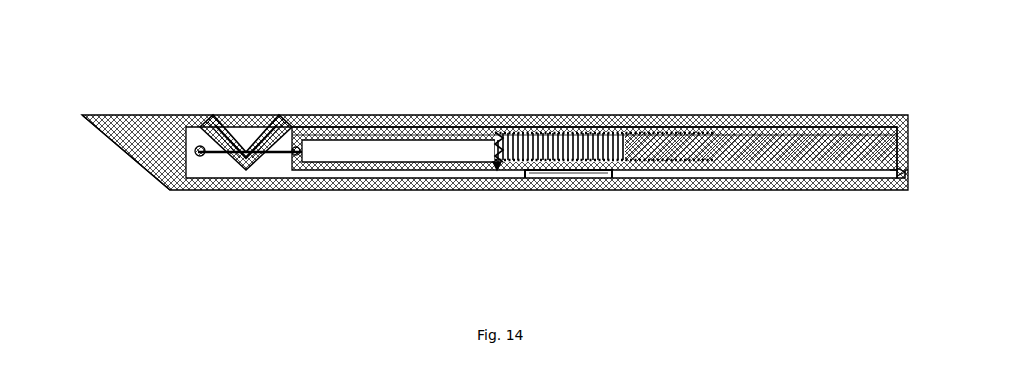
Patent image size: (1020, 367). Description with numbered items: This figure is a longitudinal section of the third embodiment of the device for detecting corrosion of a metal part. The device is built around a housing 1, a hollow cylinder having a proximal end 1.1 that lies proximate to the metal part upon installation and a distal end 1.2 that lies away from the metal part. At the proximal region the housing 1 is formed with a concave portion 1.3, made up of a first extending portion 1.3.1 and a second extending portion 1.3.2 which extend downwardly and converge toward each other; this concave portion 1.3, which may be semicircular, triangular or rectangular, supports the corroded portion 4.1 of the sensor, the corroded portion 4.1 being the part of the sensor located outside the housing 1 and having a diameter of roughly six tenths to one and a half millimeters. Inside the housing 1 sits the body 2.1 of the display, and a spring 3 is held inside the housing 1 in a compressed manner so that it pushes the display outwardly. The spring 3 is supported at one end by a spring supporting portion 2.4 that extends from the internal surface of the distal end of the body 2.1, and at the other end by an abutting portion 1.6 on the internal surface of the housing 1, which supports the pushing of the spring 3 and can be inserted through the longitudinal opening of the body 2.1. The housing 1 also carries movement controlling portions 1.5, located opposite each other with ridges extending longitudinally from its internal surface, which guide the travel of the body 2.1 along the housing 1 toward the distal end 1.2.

The housing 1 is at (419, 190).
The proximal end 1.1 is at (171, 190).
The distal end 1.2 is at (908, 190).
The concave portion 1.3 is at (263, 90).
The first extending portion 1.3.1 is at (213, 126).
The second extending portion 1.3.2 is at (278, 126).
The movement controlling portion 1.5 is at (589, 178).
The abutting portion 1.6 is at (497, 168).
The body 2.1 is at (466, 128).
The spring supporting portion 2.4 is at (650, 128).
The spring 3 is at (577, 128).
The corroded portion 4.1 is at (246, 140).